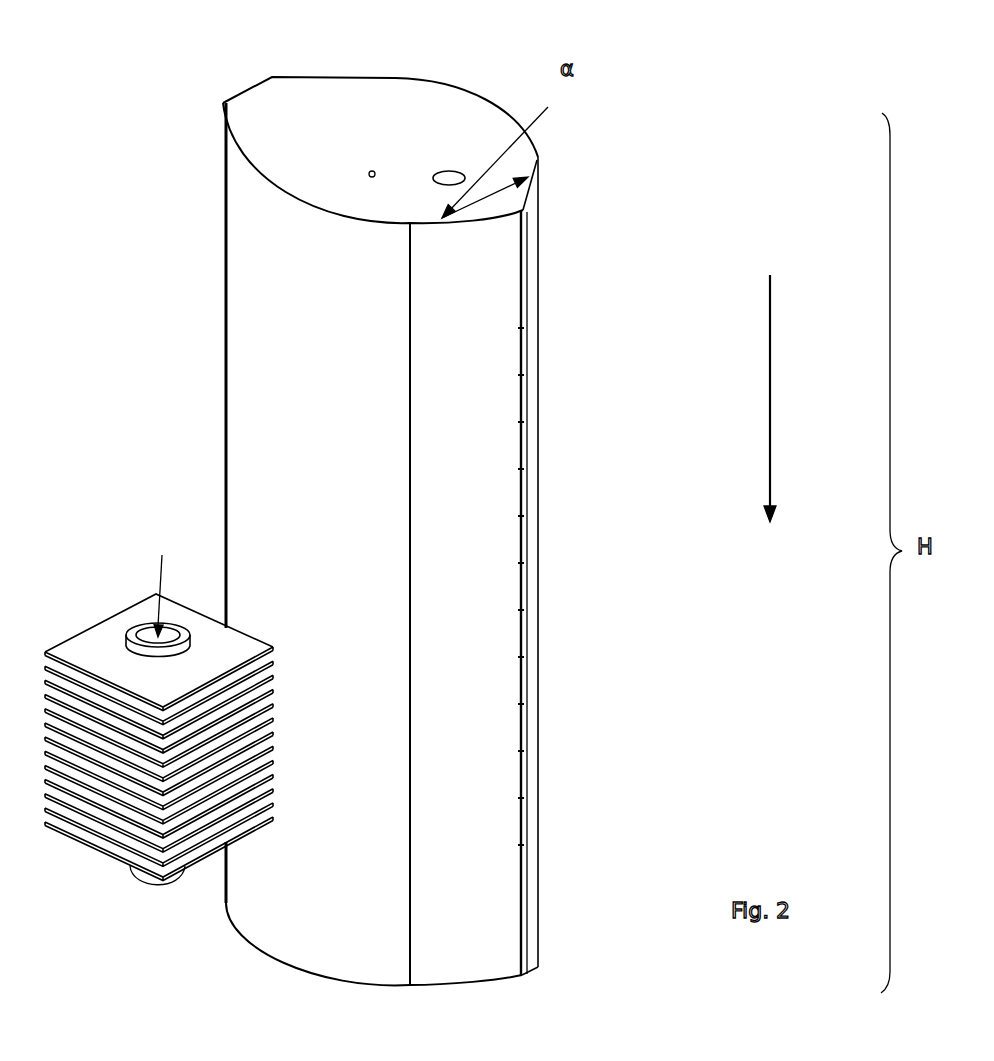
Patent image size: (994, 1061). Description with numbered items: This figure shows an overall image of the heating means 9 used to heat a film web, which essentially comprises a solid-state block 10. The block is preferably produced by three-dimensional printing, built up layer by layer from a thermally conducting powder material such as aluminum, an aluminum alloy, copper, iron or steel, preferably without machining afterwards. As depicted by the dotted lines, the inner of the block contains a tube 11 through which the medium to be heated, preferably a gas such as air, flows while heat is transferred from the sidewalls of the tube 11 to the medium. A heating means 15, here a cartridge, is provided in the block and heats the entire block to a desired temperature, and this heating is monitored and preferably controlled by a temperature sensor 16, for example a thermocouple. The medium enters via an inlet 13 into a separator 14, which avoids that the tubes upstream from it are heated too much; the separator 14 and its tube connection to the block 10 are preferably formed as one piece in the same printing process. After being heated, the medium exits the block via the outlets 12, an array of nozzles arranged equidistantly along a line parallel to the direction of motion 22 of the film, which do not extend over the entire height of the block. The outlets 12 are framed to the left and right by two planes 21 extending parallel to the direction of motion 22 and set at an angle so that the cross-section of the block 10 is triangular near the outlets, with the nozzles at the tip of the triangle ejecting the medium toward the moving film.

The heating means 9 is at (422, 498).
The solid-state block 10 is at (253, 135).
The tube 11 is at (292, 280).
The outlet 12 is at (521, 374).
The inlet 13 is at (158, 590).
The separator 14 is at (144, 722).
The heating means (cartridge) 15 is at (444, 180).
The temperature sensor 16 is at (372, 171).
The planes 21 is at (528, 893).
The direction of motion 22 is at (770, 407).